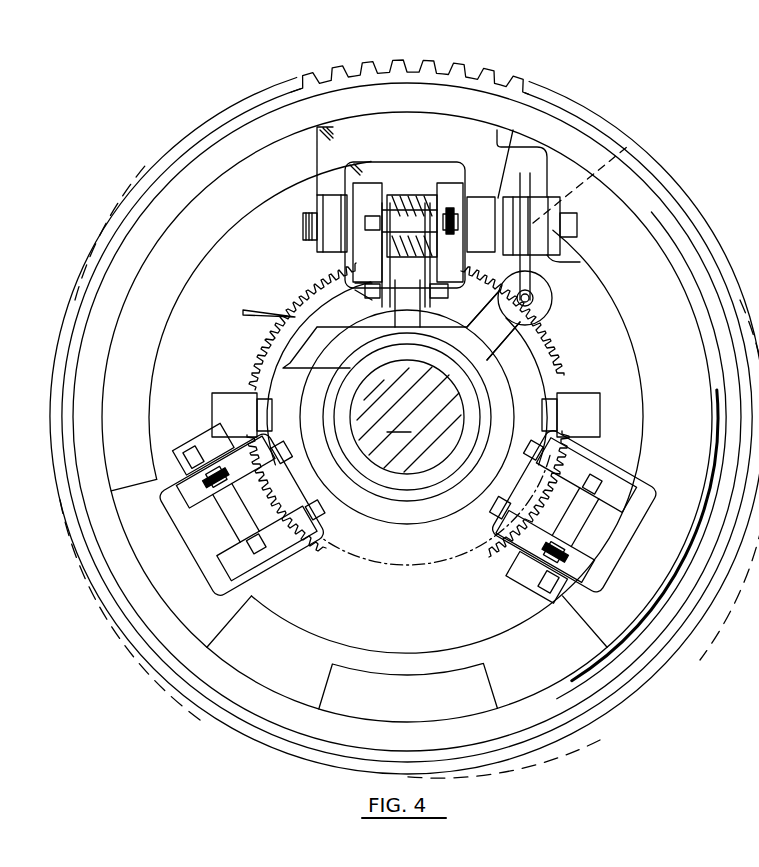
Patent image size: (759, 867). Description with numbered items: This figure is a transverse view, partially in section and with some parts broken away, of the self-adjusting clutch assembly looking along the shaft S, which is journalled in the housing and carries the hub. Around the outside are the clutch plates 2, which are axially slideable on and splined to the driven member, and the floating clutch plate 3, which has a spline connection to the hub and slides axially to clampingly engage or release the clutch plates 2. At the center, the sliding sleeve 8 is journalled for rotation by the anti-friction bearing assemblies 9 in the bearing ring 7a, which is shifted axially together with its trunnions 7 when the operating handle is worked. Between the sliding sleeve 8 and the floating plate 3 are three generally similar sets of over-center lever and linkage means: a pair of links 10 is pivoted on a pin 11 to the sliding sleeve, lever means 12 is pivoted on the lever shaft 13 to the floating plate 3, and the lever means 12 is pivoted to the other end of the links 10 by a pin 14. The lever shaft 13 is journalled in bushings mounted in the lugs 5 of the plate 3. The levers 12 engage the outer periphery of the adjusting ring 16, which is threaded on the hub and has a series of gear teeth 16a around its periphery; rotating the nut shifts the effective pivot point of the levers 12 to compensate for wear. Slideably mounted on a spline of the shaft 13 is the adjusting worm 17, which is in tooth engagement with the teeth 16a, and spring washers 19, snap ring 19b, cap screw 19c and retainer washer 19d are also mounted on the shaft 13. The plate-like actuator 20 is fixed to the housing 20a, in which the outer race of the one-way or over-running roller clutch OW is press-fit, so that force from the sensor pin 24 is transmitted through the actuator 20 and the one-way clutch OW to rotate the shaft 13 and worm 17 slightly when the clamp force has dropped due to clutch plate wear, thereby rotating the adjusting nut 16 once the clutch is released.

The clutch plates 2 is at (440, 66).
The floating clutch plate 3 is at (291, 117).
The lugs 5 is at (345, 205).
The trunnions 7 is at (230, 395).
The bearing ring 7a is at (428, 540).
The sliding sleeve 8 is at (520, 357).
The anti-friction bearing assemblies 9 is at (431, 485).
The links 10 is at (380, 308).
The pin 11 is at (367, 283).
The lever means 12 is at (366, 185).
The lever shaft 13 is at (577, 227).
The pin 14 is at (453, 210).
The adjusting ring 16 is at (307, 295).
The gear teeth 16a is at (251, 315).
The adjusting worm 17 is at (406, 195).
The spring washers 19 is at (514, 153).
The snap ring 19b is at (567, 207).
The cap screw 19c is at (303, 226).
The retainer washer 19d is at (318, 210).
The actuator 20 is at (562, 190).
The housing 20a is at (580, 262).
The sensor pin 24 is at (537, 298).
The one-way clutch OW is at (550, 175).
The shaft S is at (407, 417).